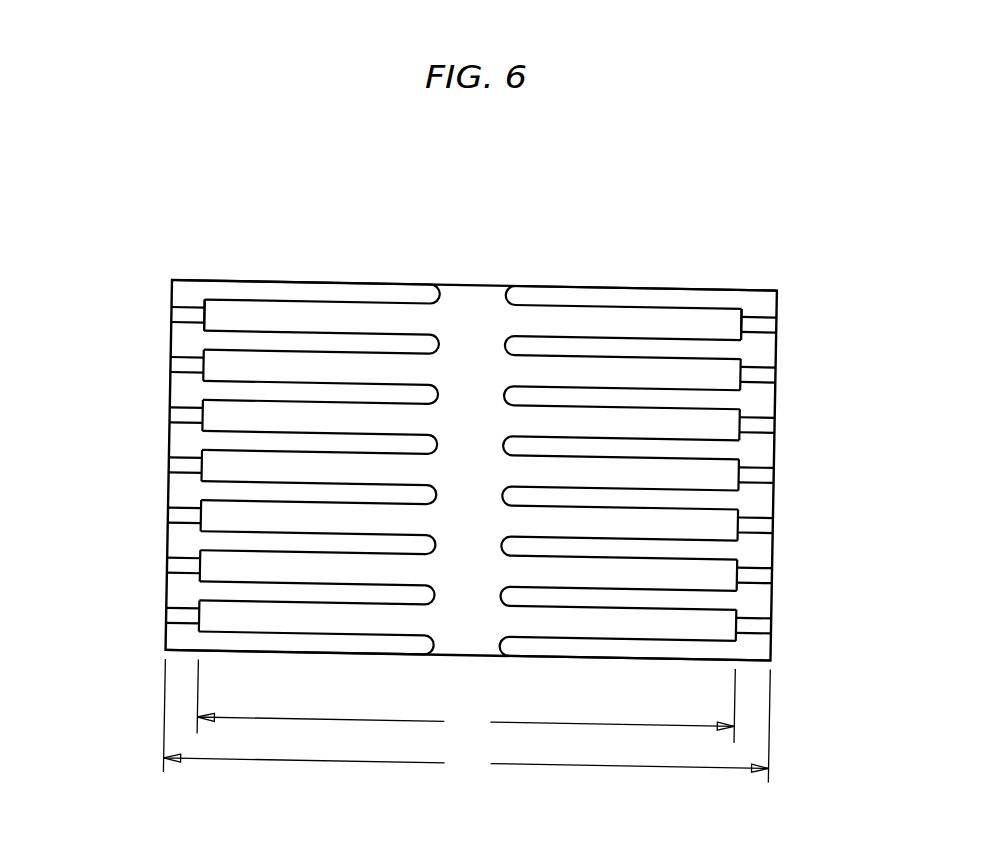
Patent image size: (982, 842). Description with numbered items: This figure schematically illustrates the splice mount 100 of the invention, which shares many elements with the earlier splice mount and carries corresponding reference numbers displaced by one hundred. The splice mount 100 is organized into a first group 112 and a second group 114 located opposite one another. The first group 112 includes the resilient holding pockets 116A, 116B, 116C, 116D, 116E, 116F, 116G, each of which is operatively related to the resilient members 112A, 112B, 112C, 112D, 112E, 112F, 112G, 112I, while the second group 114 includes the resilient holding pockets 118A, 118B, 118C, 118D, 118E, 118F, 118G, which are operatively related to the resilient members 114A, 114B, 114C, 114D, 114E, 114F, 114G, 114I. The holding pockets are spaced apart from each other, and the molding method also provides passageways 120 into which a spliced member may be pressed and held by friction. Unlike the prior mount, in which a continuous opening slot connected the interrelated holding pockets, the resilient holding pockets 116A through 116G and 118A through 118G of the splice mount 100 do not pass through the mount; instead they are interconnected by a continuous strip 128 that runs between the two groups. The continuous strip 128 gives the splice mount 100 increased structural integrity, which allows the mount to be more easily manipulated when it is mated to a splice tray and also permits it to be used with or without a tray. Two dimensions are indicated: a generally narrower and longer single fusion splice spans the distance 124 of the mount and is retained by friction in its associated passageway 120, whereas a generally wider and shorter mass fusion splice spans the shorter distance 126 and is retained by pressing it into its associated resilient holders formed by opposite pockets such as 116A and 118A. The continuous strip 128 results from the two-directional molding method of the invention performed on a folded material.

The splice mount 100 is at (486, 182).
The first group 112 is at (147, 235).
The second group 114 is at (803, 250).
The resilient member 112A is at (303, 289).
The resilient member 112B is at (248, 342).
The resilient member 112C is at (248, 392).
The resilient member 112D is at (248, 442).
The resilient member 112E is at (248, 492).
The resilient member 112F is at (248, 543).
The resilient member 112G is at (248, 593).
The resilient member 112I is at (248, 643).
The resilient member 114A is at (625, 289).
The resilient member 114B is at (599, 342).
The resilient member 114C is at (599, 392).
The resilient member 114D is at (599, 442).
The resilient member 114E is at (599, 492).
The resilient member 114F is at (599, 543).
The resilient member 114G is at (599, 593).
The resilient member 114I is at (599, 643).
The resilient holding pocket 116A is at (226, 313).
The resilient holding pocket 116B is at (216, 362).
The resilient holding pocket 116C is at (216, 412).
The resilient holding pocket 116D is at (216, 462).
The resilient holding pocket 116E is at (216, 513).
The resilient holding pocket 116F is at (216, 563).
The resilient holding pocket 116G is at (216, 613).
The resilient holding pocket 118A is at (726, 312).
The resilient holding pocket 118B is at (731, 364).
The resilient holding pocket 118C is at (731, 414).
The resilient holding pocket 118D is at (731, 464).
The resilient holding pocket 118E is at (731, 515).
The resilient holding pocket 118F is at (731, 565).
The resilient holding pocket 118G is at (731, 615).
The passageway 120 is at (182, 364).
The distance 124 is at (466, 721).
The distance 126 is at (466, 701).
The continuous strip 128 is at (497, 304).